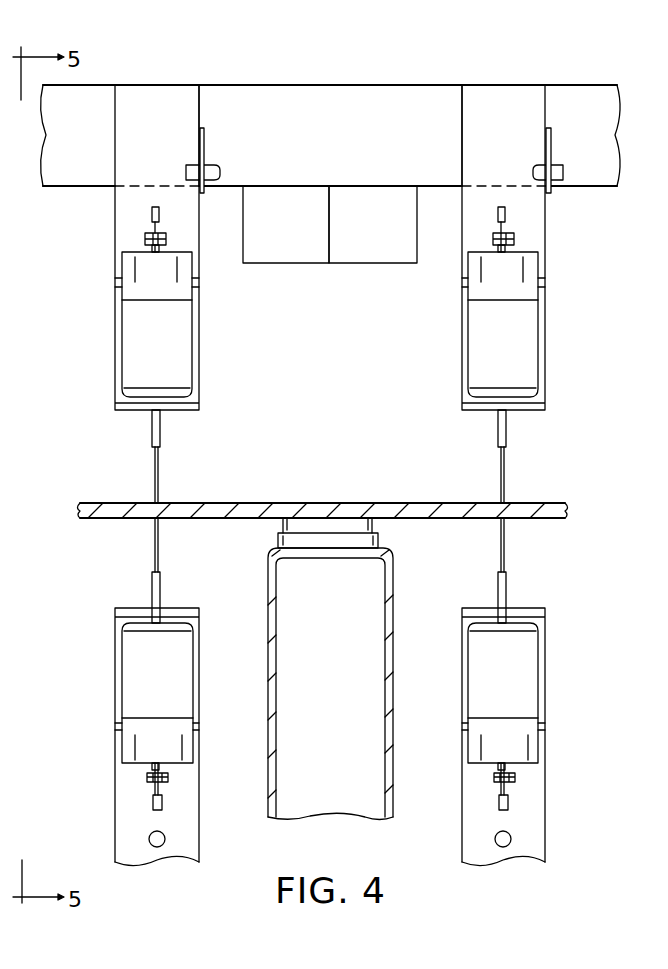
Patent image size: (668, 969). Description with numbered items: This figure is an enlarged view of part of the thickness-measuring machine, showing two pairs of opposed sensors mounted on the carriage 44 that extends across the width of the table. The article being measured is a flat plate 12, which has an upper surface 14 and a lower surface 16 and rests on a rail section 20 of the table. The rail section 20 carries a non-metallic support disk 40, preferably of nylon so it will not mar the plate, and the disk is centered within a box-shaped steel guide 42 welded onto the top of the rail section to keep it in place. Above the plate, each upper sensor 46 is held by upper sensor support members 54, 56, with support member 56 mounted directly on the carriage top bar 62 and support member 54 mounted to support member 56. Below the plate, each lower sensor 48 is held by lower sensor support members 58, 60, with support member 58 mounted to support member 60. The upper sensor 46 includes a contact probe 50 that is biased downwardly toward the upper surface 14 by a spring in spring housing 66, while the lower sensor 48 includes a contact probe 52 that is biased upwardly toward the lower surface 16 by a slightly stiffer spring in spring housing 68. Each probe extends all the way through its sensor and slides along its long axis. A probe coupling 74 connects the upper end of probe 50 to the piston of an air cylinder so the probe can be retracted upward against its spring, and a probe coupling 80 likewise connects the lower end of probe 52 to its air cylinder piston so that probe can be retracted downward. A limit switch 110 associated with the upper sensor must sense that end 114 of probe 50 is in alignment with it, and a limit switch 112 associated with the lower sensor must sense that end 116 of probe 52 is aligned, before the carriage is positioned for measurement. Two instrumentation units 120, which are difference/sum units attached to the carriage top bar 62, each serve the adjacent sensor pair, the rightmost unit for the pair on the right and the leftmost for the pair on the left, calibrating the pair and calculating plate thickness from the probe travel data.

The plate 12 is at (571, 504).
The upper surface 14 is at (122, 503).
The lower surface 16 is at (125, 518).
The rail section 20 is at (394, 620).
The non-metallic support disk 40 is at (328, 527).
The guide 42 is at (380, 540).
The carriage 44 is at (388, 80).
The upper sensor 46 is at (199, 352).
The lower sensor 48 is at (199, 696).
The contact probe 50 is at (160, 477).
The contact probe 52 is at (152, 545).
The upper sensor support member 54 is at (115, 358).
The upper sensor support member 56 is at (200, 268).
The lower sensor support member 58 is at (197, 655).
The lower sensor support member 60 is at (200, 840).
The carriage top bar 62 is at (375, 144).
The spring housing 66 is at (150, 425).
The spring housing 68 is at (162, 580).
The probe coupling 74 is at (144, 240).
The probe coupling 80 is at (145, 777).
The limit switch 110 is at (210, 167).
The limit switch 112 is at (150, 836).
The end of probe 114 is at (150, 218).
The end of probe 116 is at (165, 802).
The instrumentation unit 120 is at (312, 234).